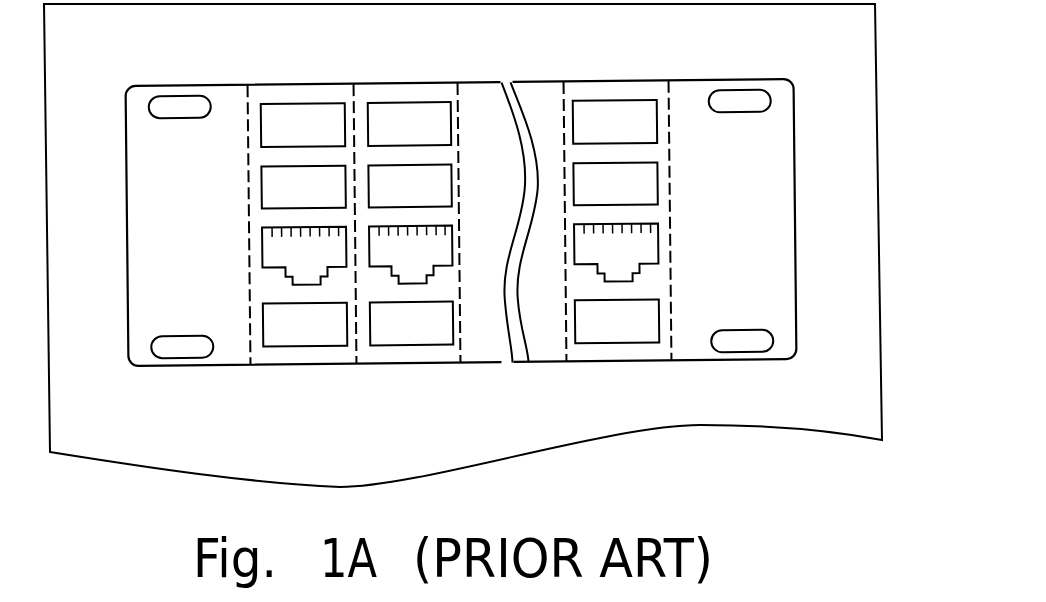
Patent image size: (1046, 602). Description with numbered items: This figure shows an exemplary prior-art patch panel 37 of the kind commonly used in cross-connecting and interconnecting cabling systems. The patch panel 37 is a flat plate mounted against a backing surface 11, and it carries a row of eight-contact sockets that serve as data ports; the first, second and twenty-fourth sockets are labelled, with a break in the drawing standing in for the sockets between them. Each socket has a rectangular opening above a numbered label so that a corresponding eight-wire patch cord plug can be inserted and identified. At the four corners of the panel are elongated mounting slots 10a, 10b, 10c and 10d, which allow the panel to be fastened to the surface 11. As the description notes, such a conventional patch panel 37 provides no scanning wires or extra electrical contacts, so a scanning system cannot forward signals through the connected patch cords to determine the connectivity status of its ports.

The wiring closet wall / mounting sheet 11 is at (850, 420).
The patch panel 37 is at (478, 100).
The mounting slot 10a is at (168, 104).
The mounting slot 10b is at (748, 95).
The mounting slot 10c is at (178, 350).
The mounting slot 10d is at (760, 343).